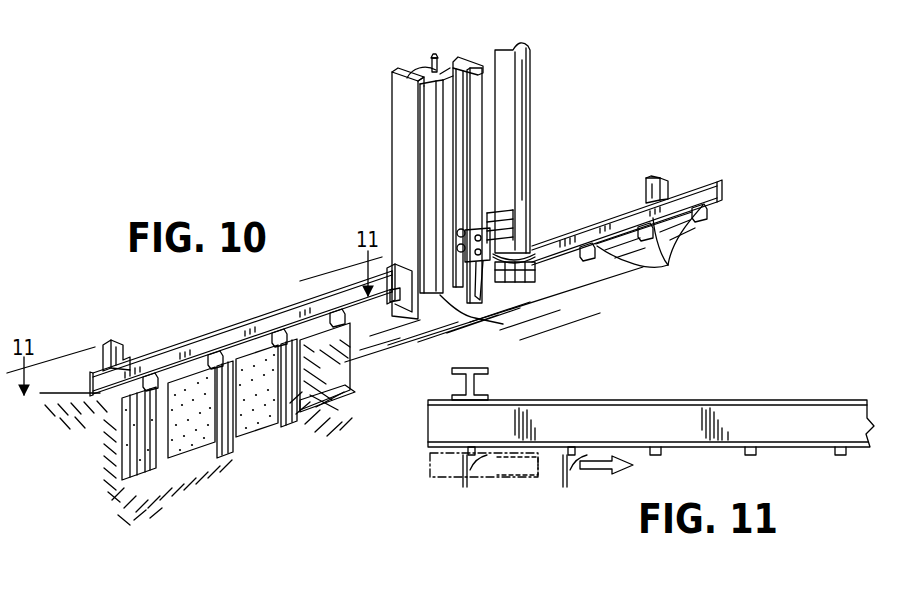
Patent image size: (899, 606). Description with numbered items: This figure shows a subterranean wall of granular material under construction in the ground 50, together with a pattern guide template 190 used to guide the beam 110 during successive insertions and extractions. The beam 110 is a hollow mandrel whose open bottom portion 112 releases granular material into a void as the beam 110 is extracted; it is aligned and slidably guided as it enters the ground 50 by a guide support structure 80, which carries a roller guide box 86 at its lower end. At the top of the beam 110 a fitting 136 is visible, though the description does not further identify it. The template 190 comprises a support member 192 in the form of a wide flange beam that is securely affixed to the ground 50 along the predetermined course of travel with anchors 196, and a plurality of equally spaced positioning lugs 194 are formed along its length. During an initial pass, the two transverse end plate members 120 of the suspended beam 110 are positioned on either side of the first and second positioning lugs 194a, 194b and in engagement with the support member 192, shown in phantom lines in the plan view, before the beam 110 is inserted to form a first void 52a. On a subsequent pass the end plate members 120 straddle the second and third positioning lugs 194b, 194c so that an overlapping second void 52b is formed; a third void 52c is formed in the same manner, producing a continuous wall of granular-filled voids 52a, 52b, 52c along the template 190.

In FIG. 10, the ground 50 is at (0, 113).
In FIG. 10, the first void 52a is at (190, 455).
In FIG. 10, the second void 52b is at (262, 440).
In FIG. 10, the third void 52c is at (322, 378).
In FIG. 10, the guide support structure 80 is at (524, 88).
In FIG. 10, the roller guide box 86 is at (497, 270).
In FIG. 10, the beam 110 is at (383, 134).
In FIG. 10, the open bottom portion 112 is at (490, 311).
In FIG. 10, the transverse end plate members 120 is at (400, 85).
In FIG. 11, the transverse end plate members 120 is at (490, 434).
In FIG. 10, the fastener 136 is at (432, 70).
In FIG. 10, the pattern guide template 190 is at (320, 299).
In FIG. 10, the support member 192 is at (561, 228).
In FIG. 11, the support member 192 is at (690, 398).
In FIG. 10, the positioning lugs 194 is at (643, 250).
In FIG. 11, the positioning lugs 194 is at (756, 453).
In FIG. 10, the first positioning lug 194a is at (148, 372).
In FIG. 11, the first positioning lug 194a is at (466, 456).
In FIG. 10, the second positioning lug 194b is at (212, 350).
In FIG. 11, the second positioning lug 194b is at (565, 456).
In FIG. 10, the third positioning lug 194c is at (278, 327).
In FIG. 11, the third positioning lug 194c is at (660, 453).
In FIG. 10, the anchors 196 is at (650, 176).
In FIG. 11, the anchors 196 is at (485, 386).